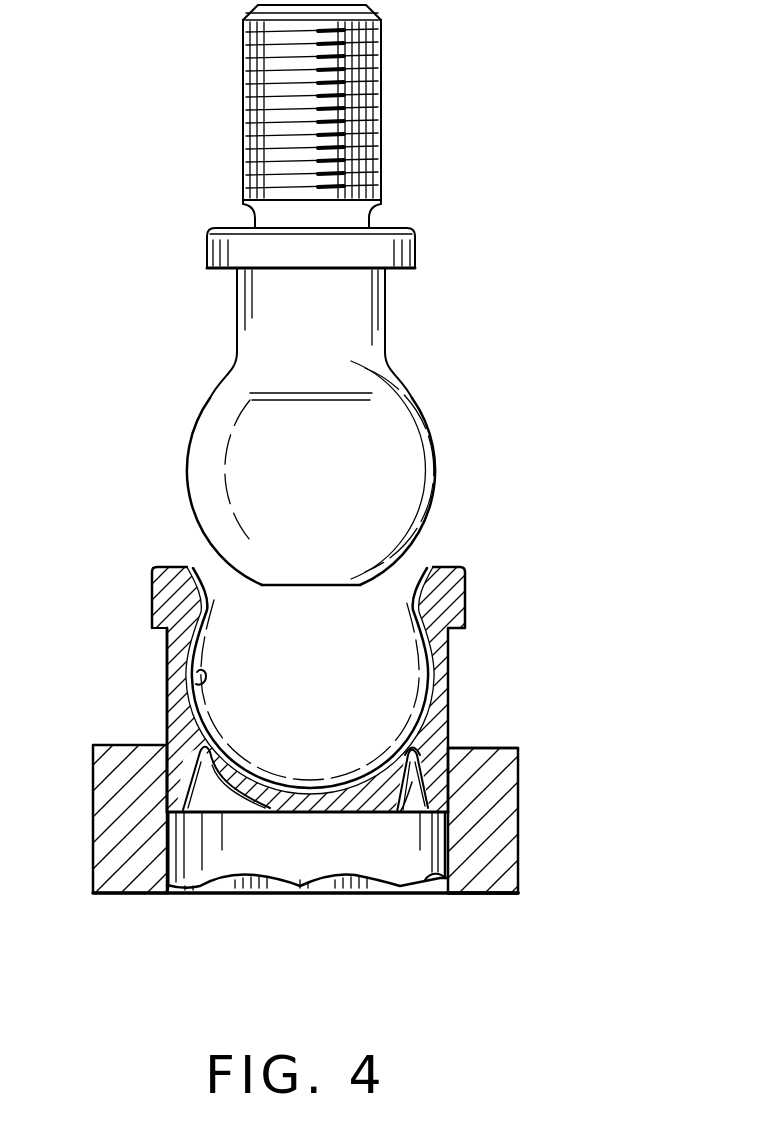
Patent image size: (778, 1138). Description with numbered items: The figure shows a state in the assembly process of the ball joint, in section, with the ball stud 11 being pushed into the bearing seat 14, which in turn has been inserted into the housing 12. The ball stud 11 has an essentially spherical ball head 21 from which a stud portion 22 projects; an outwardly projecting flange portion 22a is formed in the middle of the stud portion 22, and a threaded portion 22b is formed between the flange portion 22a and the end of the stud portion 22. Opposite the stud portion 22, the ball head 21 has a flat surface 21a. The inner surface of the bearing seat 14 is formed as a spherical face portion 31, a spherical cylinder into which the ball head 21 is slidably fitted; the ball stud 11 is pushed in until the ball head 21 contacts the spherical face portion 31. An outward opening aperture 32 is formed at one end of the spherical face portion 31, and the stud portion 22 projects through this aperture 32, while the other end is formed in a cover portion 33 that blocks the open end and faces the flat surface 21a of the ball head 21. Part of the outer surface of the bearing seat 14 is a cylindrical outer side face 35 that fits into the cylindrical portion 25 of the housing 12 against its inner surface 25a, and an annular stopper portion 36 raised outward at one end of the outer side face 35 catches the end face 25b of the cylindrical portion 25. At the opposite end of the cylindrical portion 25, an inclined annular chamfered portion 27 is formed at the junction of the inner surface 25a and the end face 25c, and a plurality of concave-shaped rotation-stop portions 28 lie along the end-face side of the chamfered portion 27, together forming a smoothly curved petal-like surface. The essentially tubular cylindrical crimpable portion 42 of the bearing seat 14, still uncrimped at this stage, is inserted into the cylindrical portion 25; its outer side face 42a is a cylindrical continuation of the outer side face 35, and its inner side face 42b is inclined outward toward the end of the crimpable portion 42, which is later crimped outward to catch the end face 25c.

The ball stud 11 is at (384, 313).
The housing 12 is at (520, 820).
The bearing seat 14 is at (441, 663).
The ball head 21 is at (410, 433).
The flat surface 21a is at (297, 587).
The stud portion 22 is at (382, 95).
The flange portion 22a is at (415, 238).
The threaded portion 22b is at (383, 42).
The cylindrical portion 25 is at (497, 865).
The inner surface 25a is at (446, 872).
The end face 25b is at (481, 748).
The end face 25c is at (497, 898).
The annular chamfered portion 27 is at (167, 897).
The rotation-stop portions 28 is at (347, 895).
The spherical face portion 31 is at (198, 680).
The aperture 32 is at (407, 558).
The cover portion 33 is at (294, 800).
The outer side face 35 is at (163, 690).
The annular stopper portion 36 is at (468, 593).
The cylindrical crimpable portion 42 is at (437, 798).
The outer side face 42a is at (412, 782).
The inner side face 42b is at (460, 763).